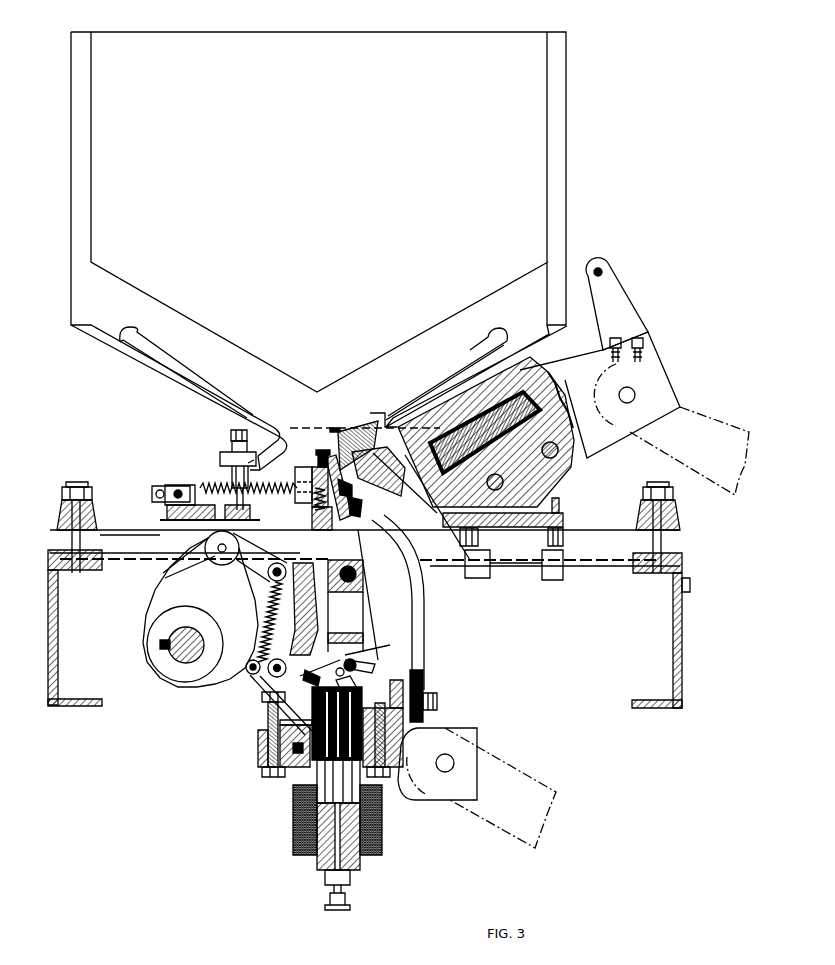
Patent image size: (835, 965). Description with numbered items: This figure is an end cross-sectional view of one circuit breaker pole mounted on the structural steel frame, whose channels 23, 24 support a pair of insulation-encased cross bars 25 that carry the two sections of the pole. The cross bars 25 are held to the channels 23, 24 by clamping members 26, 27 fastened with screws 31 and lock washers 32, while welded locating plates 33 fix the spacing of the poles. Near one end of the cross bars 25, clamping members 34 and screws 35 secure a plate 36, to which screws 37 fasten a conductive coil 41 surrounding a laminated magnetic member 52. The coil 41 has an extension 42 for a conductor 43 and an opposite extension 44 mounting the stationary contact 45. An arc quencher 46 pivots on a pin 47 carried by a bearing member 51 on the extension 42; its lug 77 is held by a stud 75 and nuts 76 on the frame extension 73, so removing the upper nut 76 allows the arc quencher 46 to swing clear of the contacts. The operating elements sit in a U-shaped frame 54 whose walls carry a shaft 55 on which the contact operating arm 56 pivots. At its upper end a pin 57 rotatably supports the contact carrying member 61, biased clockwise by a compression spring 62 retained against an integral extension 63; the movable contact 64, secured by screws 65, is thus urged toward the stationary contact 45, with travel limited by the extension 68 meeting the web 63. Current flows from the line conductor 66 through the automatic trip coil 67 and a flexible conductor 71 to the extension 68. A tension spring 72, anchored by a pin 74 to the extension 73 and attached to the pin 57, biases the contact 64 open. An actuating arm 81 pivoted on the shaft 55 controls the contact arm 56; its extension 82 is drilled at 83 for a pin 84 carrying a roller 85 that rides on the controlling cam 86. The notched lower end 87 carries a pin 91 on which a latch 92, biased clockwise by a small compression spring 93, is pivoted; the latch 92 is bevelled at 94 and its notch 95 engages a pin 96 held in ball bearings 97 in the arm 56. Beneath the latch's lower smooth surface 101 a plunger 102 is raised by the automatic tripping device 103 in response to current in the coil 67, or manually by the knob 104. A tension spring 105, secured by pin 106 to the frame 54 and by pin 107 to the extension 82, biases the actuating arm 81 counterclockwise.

The channel 23 is at (90, 708).
The channel 24 is at (660, 703).
The cross bars 25 is at (608, 552).
The clamping member 26 is at (60, 510).
The clamping member 27 is at (678, 516).
The screws 31 is at (70, 482).
The lock washers 32 is at (62, 496).
The locating plates 33 is at (50, 555).
The clamping members 34 is at (470, 578).
The screws 35 is at (520, 564).
The plate 36 is at (563, 513).
The screws 37 is at (568, 532).
The conductive coil 41 is at (542, 364).
The extension 42 is at (655, 362).
The conductor 43 is at (712, 400).
The extension 44 is at (388, 492).
The stationary contact 45 is at (352, 430).
The arc quencher 46 is at (319, 251).
The pin 47 is at (603, 272).
The bearing member 51 is at (628, 300).
The laminated magnetic member 52 is at (540, 376).
The U-shaped frame 54 is at (372, 620).
The shaft 55 is at (364, 577).
The contact operating arm 56 is at (355, 602).
The pin 57 is at (352, 492).
The contact carrying member 61 is at (300, 467).
The compression spring 62 is at (311, 500).
The extension 63 is at (311, 516).
The movable contact 64 is at (336, 427).
The screws 65 is at (322, 452).
The line conductor 66 is at (520, 772).
The automatic trip coil 67 is at (290, 770).
The extension 68 is at (362, 514).
The flexible conductor 71 is at (424, 632).
The tension spring 72 is at (200, 483).
The extension 73 is at (166, 513).
The pin 74 is at (175, 485).
The stud 75 is at (230, 433).
The nuts 76 is at (219, 455).
The lug 77 is at (272, 448).
The actuating arm 81 is at (190, 534).
The extension 82 is at (262, 550).
The drilled hole 83 is at (165, 573).
The pin 84 is at (165, 585).
The roller 85 is at (205, 546).
The controlling cam 86 is at (200, 612).
The lower end 87 is at (250, 660).
The pin 91 is at (254, 686).
The latch 92 is at (310, 672).
The compression spring 93 is at (292, 625).
The bevel 94 is at (360, 665).
The notch 95 is at (355, 683).
The pin 96 is at (375, 662).
The ball bearings 97 is at (371, 652).
The lower smooth surface 101 is at (320, 680).
The plunger 102 is at (430, 685).
The automatic tripping device 103 is at (380, 862).
The knob 104 is at (330, 910).
The tension spring 105 is at (285, 626).
The pin 106 is at (268, 673).
The pin 107 is at (277, 562).